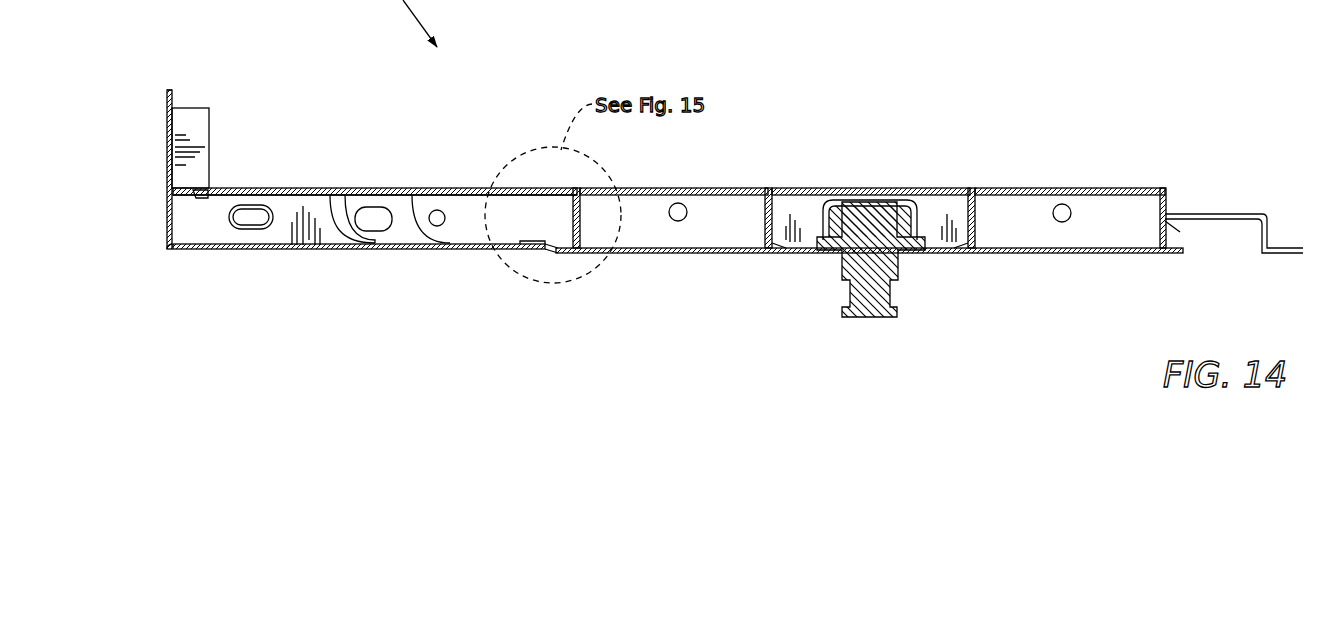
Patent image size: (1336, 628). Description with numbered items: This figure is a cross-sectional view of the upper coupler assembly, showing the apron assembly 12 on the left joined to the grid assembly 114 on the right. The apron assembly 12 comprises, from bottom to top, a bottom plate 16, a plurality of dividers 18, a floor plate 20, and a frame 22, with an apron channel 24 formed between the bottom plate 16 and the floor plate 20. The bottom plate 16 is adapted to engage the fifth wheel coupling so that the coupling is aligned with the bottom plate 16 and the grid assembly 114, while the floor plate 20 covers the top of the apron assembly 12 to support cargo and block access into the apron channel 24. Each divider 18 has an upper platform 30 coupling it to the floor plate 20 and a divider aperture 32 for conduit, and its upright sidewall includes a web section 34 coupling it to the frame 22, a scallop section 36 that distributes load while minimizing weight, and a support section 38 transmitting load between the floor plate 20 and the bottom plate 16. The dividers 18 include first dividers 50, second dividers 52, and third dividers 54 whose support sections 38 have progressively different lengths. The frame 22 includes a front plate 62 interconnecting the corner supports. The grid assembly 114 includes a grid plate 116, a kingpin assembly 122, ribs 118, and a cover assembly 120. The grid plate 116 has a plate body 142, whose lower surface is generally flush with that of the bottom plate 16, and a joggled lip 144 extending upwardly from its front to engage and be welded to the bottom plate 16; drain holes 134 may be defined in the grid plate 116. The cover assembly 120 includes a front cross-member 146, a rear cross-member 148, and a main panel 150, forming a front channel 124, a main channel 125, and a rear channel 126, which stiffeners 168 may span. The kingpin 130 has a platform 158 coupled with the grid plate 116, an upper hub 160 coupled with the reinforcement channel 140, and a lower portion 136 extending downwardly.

The apron assembly 12 is at (404, 128).
The bottom plate 16 is at (458, 258).
The dividers 18 is at (298, 230).
The floor plate 20 is at (466, 186).
The frame 22 is at (181, 120).
The apron channel 24 is at (476, 228).
The upper platform 30 is at (292, 196).
The divider aperture 32 is at (251, 220).
The web section 34 is at (185, 249).
The scallop section 36 is at (256, 203).
The support section 38 is at (345, 246).
The first dividers 50 is at (278, 232).
The second dividers 52 is at (342, 216).
The third dividers 54 is at (398, 216).
The front plate 62 is at (176, 152).
The grid assembly 114 is at (931, 112).
The grid plate 116 is at (730, 258).
The ribs 118 is at (960, 200).
The cover assembly 120 is at (797, 172).
The kingpin assembly 122 is at (906, 322).
The front channel 124 is at (651, 228).
The main channel 125 is at (793, 240).
The rear channel 126 is at (1030, 228).
The kingpin 130 is at (886, 320).
The drain holes 134 is at (953, 236).
The lower portion 136 is at (849, 292).
The reinforcement channel 140 is at (912, 222).
The plate body 142 is at (592, 256).
The joggled lip 144 is at (520, 241).
The front cross-member 146 is at (680, 190).
The rear cross-member 148 is at (1065, 186).
The main panel 150 is at (832, 197).
The platform 158 is at (901, 313).
The upper hub 160 is at (875, 206).
The stiffeners 168 is at (722, 200).